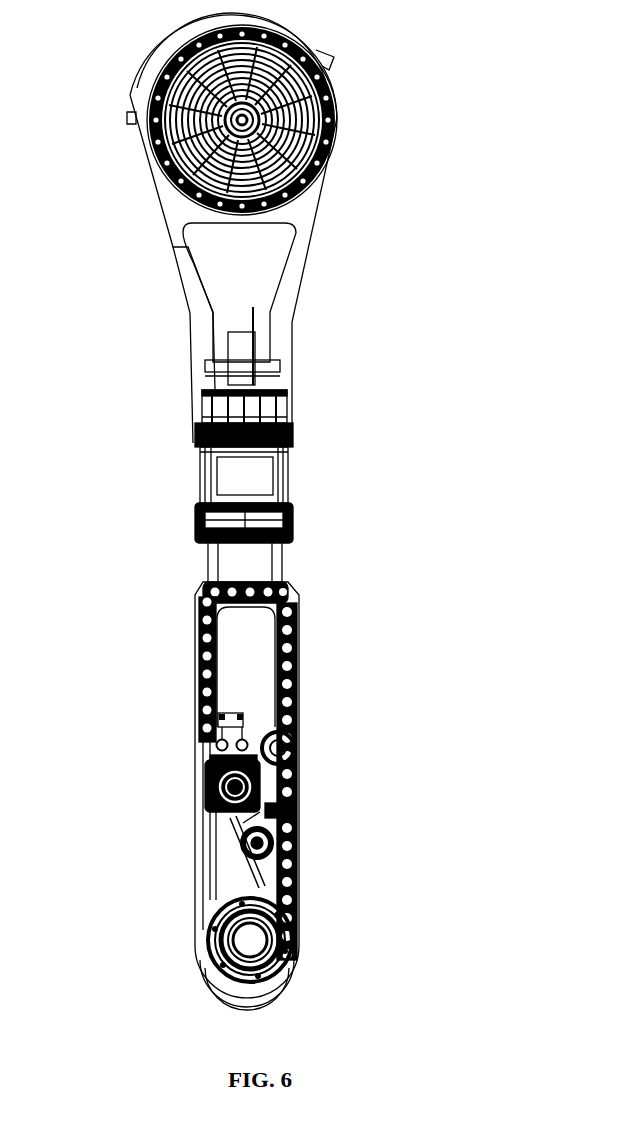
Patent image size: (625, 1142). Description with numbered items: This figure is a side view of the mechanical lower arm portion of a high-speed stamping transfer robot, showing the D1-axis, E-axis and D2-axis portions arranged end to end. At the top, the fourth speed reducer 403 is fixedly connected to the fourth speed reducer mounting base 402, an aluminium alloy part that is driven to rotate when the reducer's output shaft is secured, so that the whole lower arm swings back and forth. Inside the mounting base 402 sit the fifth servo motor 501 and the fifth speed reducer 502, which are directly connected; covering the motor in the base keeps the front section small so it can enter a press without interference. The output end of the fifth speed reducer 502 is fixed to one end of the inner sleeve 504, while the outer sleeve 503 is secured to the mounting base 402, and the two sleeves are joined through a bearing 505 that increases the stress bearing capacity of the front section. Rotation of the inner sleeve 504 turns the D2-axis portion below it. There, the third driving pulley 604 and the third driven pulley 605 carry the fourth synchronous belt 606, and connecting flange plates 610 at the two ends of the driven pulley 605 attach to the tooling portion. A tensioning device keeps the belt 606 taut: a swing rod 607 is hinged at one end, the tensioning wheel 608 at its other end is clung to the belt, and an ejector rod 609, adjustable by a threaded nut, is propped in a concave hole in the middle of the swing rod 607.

The fourth speed reducer mounting base 402 is at (190, 303).
The fourth speed reducer 403 is at (127, 117).
The fifth servo motor 501 is at (247, 340).
The fifth speed reducer 502 is at (290, 388).
The outer sleeve 503 is at (288, 480).
The inner sleeve 504 is at (262, 572).
The bearing 505 is at (288, 513).
The third driving pulley 604 is at (200, 783).
The third driven pulley 605 is at (197, 940).
The fourth synchronous belt 606 is at (200, 873).
The swing rod 607 is at (297, 770).
The tensioning wheel 608 is at (300, 853).
The ejector rod 609 is at (270, 808).
The connecting flange plates 610 is at (210, 982).